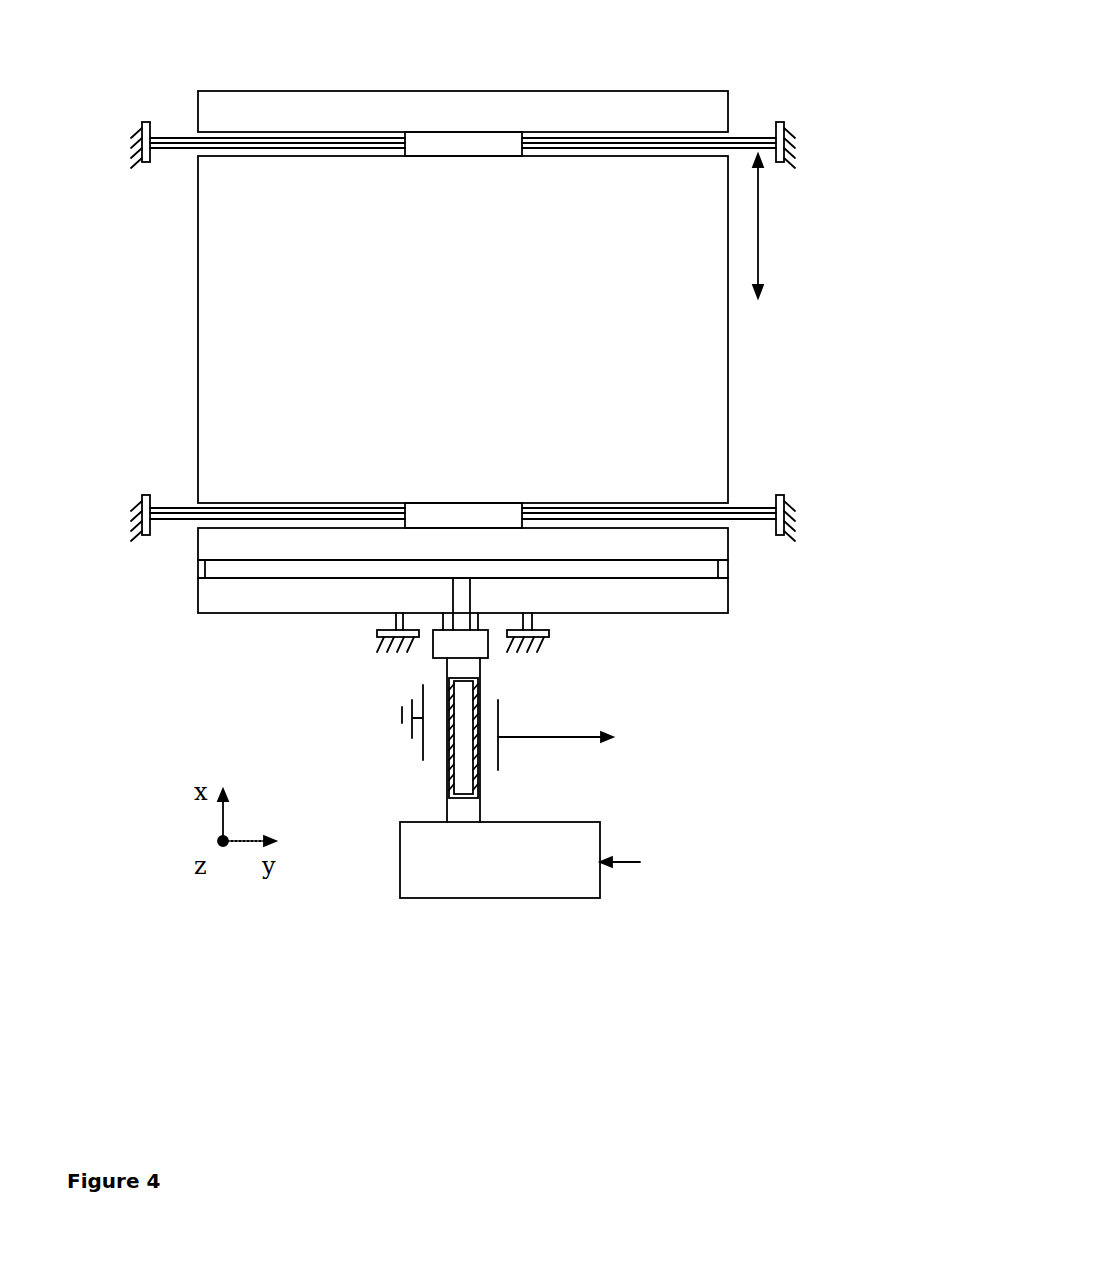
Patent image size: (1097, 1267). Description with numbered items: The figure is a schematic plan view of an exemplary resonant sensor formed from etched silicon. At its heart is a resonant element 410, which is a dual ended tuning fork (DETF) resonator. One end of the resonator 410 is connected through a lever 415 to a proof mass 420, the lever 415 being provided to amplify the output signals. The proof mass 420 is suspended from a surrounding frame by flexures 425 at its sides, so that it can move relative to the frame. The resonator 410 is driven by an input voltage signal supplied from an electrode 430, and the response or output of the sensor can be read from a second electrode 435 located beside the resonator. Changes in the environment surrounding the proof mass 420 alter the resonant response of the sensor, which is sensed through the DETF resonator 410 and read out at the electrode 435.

The resonant element 410 is at (448, 737).
The lever 415 is at (275, 616).
The proof mass 420 is at (675, 372).
The flexures 425 is at (176, 138).
The electrode 430 is at (462, 862).
The electrode 435 is at (500, 718).